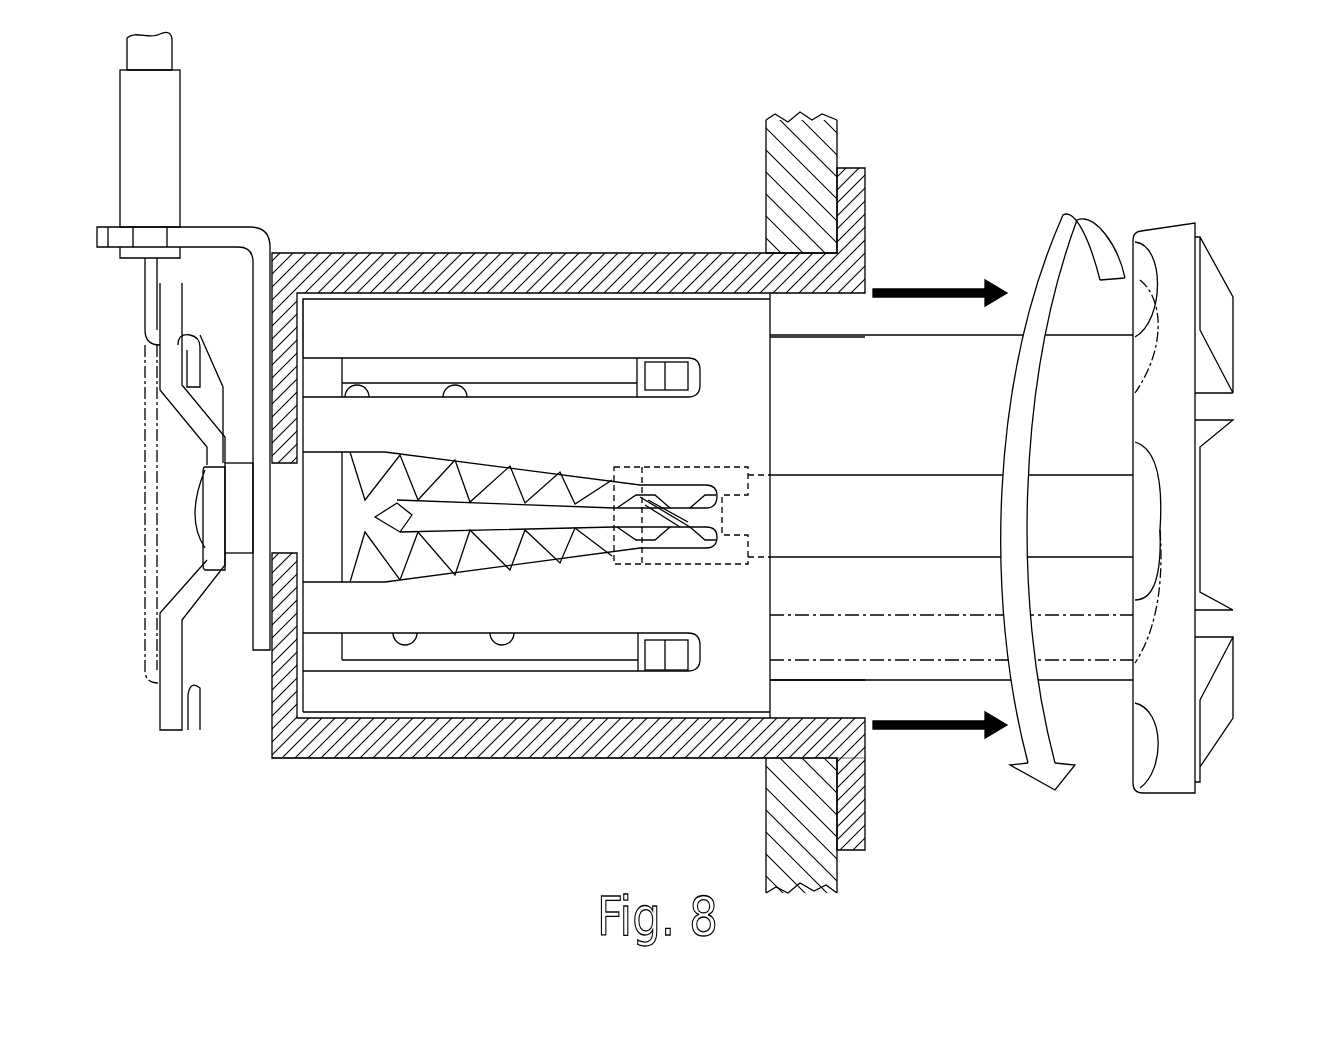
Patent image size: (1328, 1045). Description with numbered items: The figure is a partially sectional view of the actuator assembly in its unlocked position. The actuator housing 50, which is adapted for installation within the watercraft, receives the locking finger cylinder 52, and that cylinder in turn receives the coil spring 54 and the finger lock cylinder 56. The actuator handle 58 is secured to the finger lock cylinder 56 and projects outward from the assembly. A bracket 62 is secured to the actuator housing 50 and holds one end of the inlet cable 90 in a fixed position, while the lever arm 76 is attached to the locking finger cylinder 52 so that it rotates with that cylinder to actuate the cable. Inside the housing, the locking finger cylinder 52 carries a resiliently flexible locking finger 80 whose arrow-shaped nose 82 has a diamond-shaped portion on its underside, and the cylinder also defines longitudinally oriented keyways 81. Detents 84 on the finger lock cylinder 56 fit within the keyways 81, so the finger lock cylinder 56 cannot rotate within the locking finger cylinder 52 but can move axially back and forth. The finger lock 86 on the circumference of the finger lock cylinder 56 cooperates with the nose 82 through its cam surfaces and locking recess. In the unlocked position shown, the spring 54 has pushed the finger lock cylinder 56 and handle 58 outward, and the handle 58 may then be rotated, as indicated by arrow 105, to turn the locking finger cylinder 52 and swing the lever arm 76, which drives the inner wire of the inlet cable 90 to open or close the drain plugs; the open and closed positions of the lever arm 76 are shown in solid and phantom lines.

The actuator housing 50 is at (368, 762).
The locking finger cylinder 52 is at (498, 688).
The coil spring 54 is at (553, 388).
The finger lock cylinder 56 is at (955, 685).
The actuator handle 58 is at (1236, 406).
The bracket 62 is at (270, 222).
The lever arm 76 is at (178, 427).
The locking finger 80 is at (470, 515).
The keyways 81 is at (523, 365).
The arrow-shaped nose 82 is at (400, 497).
The detents 84 is at (678, 375).
The finger lock 86 is at (658, 464).
The inlet cable 90 is at (185, 115).
The arrow 105 is at (1037, 728).